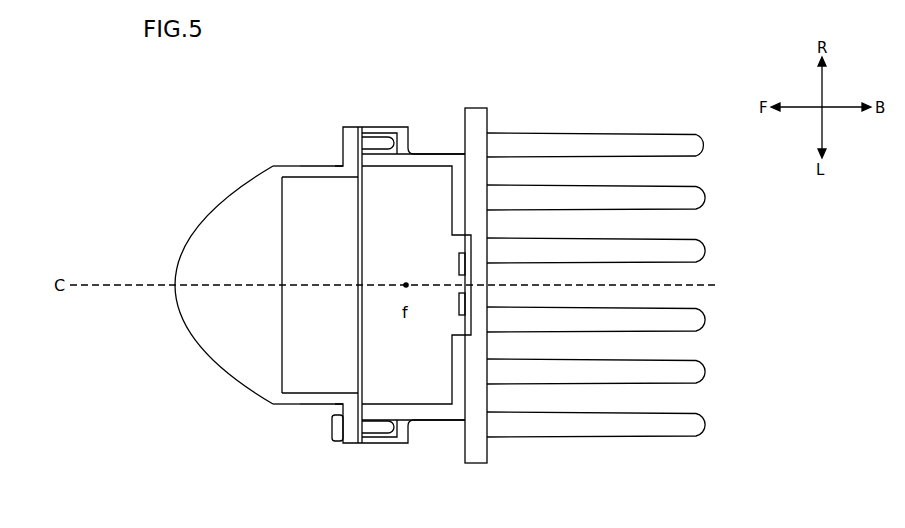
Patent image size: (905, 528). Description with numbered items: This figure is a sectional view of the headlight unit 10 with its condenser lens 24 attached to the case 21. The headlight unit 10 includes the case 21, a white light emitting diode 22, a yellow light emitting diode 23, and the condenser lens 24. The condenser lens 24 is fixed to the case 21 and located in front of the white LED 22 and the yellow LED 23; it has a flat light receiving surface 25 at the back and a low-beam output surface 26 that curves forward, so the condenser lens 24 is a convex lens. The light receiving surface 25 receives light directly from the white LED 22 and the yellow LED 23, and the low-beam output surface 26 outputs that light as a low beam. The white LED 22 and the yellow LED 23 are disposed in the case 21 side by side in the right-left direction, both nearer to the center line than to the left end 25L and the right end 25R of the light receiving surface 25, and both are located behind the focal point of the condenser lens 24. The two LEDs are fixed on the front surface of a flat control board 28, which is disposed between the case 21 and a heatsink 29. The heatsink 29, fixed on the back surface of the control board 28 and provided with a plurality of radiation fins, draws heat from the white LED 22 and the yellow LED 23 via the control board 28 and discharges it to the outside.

The headlight unit 10 is at (337, 77).
The case 21 is at (403, 444).
The white light emitting diode 22 is at (460, 317).
The yellow light emitting diode 23 is at (460, 254).
The condenser lens 24 is at (222, 232).
The light receiving surface 25 is at (283, 373).
The right end of the light receiving surface 25R is at (273, 168).
The left end of the light receiving surface 25L is at (273, 403).
The low-beam output surface 26 is at (205, 360).
The control board 28 is at (468, 322).
The heatsink 29 is at (570, 422).